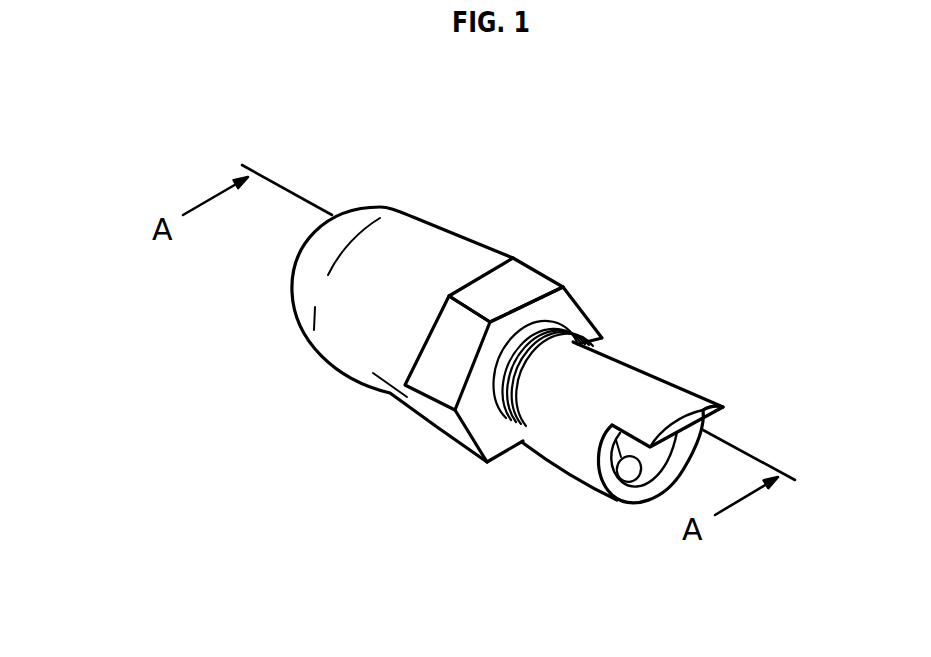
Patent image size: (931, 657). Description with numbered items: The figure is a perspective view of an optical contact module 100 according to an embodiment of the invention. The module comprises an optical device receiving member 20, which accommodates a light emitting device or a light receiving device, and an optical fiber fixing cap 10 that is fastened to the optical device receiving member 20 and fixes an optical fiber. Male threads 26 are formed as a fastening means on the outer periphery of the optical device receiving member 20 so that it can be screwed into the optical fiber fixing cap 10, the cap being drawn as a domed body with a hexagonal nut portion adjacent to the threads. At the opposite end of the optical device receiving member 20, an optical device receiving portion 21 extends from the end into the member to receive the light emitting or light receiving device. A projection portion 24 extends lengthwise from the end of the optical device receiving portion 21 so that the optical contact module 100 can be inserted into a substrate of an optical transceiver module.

The optical contact module 100 is at (783, 153).
The optical fiber fixing cap 10 is at (438, 203).
The optical device receiving member 20 is at (630, 333).
The optical device receiving portion 21 is at (637, 482).
The projection portion 24 is at (693, 390).
The male threads 26 is at (504, 426).